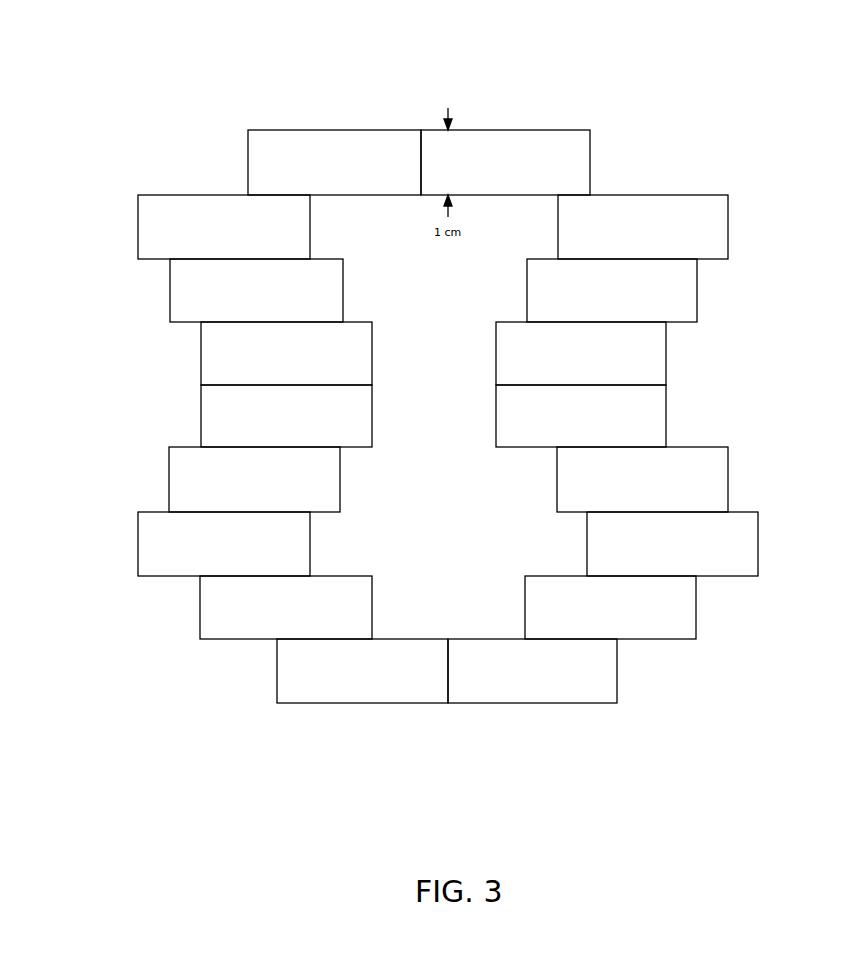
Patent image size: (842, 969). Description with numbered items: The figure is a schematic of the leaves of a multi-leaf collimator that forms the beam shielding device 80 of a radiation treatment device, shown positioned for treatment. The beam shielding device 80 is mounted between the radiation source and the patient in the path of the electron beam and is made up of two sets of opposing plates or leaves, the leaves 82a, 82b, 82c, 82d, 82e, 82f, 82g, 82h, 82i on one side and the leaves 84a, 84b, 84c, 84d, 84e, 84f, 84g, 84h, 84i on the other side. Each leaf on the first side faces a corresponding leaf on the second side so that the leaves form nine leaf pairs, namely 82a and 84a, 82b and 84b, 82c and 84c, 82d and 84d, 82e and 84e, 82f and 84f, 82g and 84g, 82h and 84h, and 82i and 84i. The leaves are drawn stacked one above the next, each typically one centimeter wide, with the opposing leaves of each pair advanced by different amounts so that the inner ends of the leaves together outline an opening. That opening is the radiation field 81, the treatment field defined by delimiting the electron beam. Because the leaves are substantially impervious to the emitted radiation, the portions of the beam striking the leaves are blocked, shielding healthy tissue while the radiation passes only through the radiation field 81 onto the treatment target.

The beam shielding device 80 is at (461, 53).
The radiation field 81 is at (462, 636).
The leaf 82a is at (337, 130).
The leaf 82b is at (138, 225).
The leaf 82c is at (170, 290).
The leaf 82d is at (201, 354).
The leaf 82e is at (201, 416).
The leaf 82f is at (169, 479).
The leaf 82g is at (138, 545).
The leaf 82h is at (200, 608).
The leaf 82i is at (277, 685).
The leaf 84a is at (590, 130).
The leaf 84b is at (728, 213).
The leaf 84c is at (697, 278).
The leaf 84d is at (666, 340).
The leaf 84e is at (666, 402).
The leaf 84f is at (728, 465).
The leaf 84g is at (758, 528).
The leaf 84h is at (696, 625).
The leaf 84i is at (617, 687).